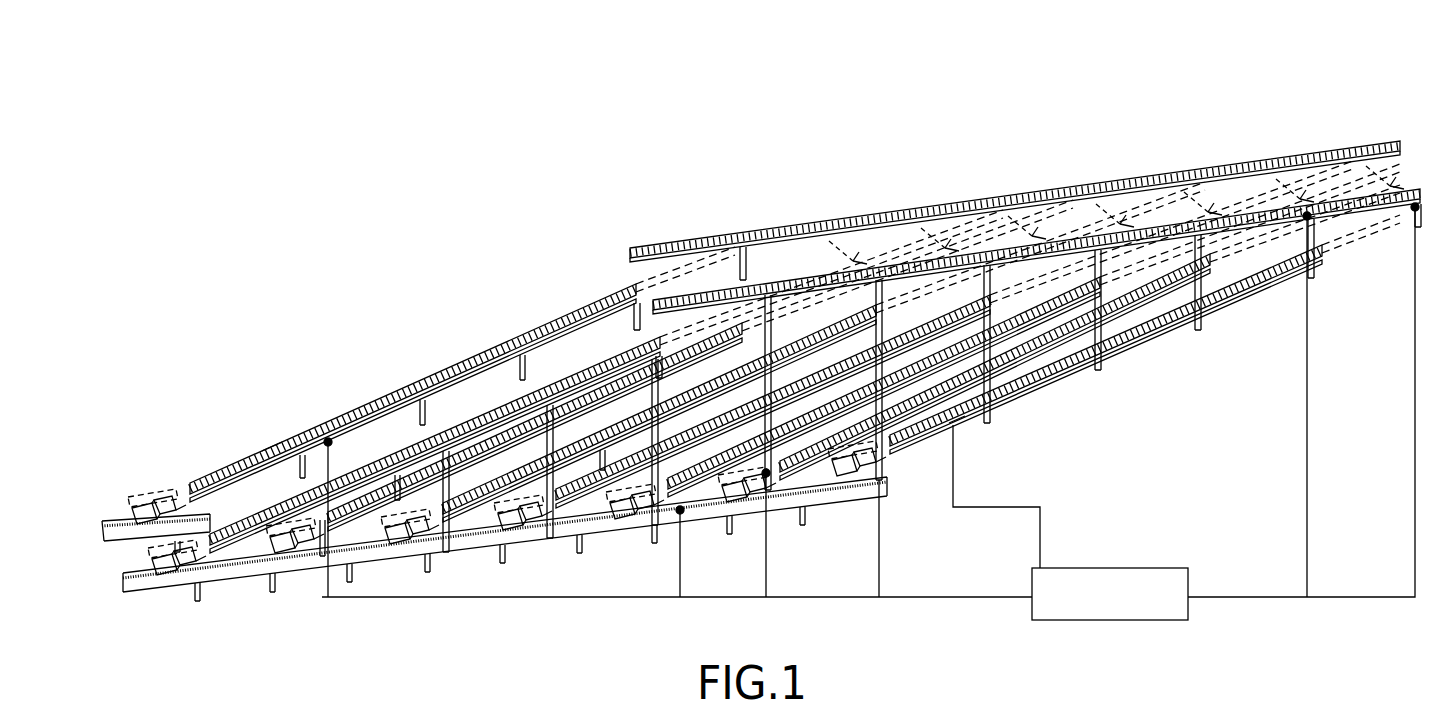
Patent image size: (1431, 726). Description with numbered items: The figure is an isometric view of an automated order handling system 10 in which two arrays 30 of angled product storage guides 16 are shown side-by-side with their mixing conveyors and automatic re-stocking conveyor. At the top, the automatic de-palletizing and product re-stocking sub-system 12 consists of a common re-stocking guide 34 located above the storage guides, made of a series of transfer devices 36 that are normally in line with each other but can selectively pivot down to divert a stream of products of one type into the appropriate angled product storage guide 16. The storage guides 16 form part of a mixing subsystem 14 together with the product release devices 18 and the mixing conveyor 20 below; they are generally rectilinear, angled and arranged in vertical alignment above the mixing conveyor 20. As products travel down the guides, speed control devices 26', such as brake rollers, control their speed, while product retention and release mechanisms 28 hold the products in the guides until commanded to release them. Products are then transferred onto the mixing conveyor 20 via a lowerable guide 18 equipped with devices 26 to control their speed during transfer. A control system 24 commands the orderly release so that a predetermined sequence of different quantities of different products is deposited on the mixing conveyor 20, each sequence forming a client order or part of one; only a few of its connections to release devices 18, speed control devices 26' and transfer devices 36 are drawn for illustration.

The system for automated order handling 10 is at (362, 128).
The automatic layer de-palletizing and product re-stocking sub-system 12 is at (750, 162).
The mixing subsystem 14 is at (368, 383).
The angled product storage guides 16 is at (455, 345).
The product release device (lowerable guide) 18 is at (148, 500).
The mixing conveyor 20 is at (115, 513).
The control system 24 is at (1128, 620).
The speed control device 26 is at (517, 508).
The speed control device 26' is at (634, 429).
The product retention and release mechanism 28 is at (327, 437).
The array of angled product storage guides 30 is at (1116, 357).
The common re-stocking guide 34 is at (799, 218).
The transfer devices 36 is at (968, 195).